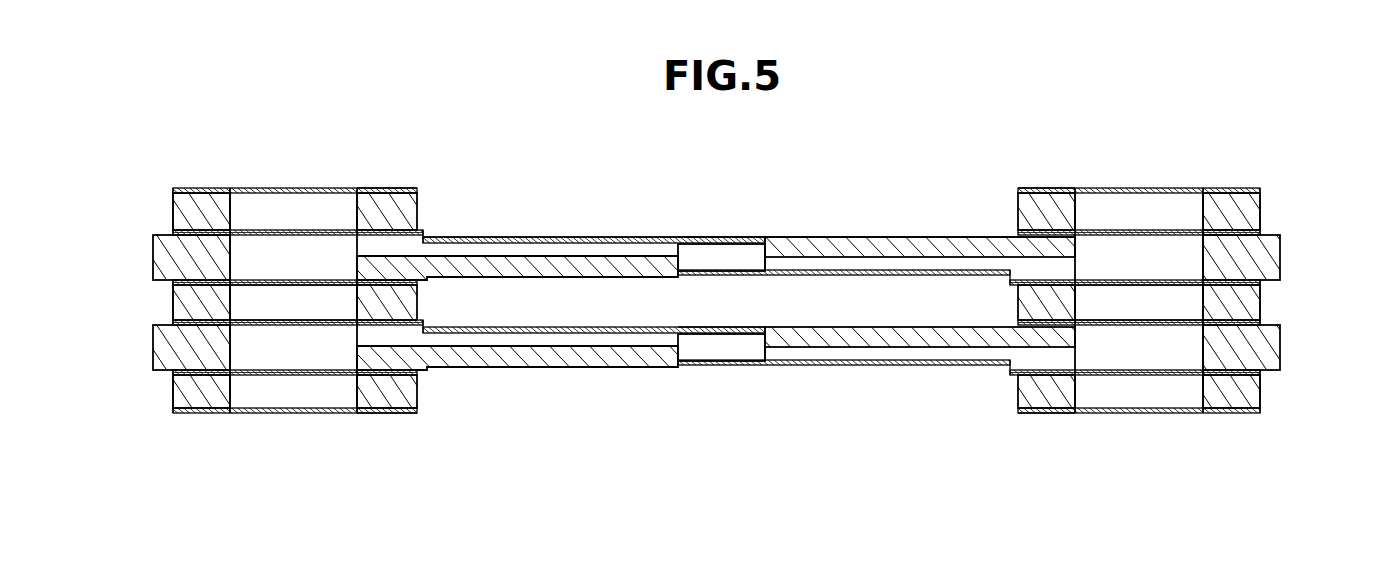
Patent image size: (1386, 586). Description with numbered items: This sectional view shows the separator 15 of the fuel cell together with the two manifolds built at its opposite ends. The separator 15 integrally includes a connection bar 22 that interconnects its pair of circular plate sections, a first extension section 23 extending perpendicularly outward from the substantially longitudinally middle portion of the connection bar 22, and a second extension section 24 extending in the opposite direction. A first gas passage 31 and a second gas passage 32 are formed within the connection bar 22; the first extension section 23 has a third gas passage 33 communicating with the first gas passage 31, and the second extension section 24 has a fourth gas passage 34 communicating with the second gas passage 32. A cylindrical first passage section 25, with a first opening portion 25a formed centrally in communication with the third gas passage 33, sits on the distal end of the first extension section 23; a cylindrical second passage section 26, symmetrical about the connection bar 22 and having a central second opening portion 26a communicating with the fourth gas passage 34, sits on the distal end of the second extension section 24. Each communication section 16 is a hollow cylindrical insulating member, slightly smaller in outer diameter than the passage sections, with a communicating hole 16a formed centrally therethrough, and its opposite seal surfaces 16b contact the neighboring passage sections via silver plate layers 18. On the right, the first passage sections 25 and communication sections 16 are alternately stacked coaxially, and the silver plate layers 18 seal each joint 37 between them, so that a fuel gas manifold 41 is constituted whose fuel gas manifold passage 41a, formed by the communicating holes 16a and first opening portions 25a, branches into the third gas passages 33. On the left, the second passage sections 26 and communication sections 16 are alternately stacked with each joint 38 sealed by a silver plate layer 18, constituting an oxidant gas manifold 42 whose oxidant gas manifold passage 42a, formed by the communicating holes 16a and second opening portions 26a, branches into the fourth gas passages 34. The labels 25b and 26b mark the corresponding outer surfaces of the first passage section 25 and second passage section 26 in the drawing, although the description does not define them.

The separator 15 is at (922, 236).
The communication section 16 is at (177, 213).
The communicating hole 16a is at (357, 200).
The seal surface 16b is at (209, 188).
The silver plate layer 18 is at (383, 188).
The connection bar 22 is at (713, 237).
The first extension section 23 is at (860, 237).
The second extension section 24 is at (558, 237).
The first passage section 25 is at (1277, 257).
The first opening portion 25a is at (1202, 255).
The outer face of right flange 25b is at (1258, 228).
The second passage section 26 is at (156, 262).
The second opening portion 26a is at (232, 258).
The outer face of left flange 26b is at (177, 231).
The first gas passage 31 is at (717, 262).
The second gas passage 32 is at (754, 250).
The third gas passage 33 is at (972, 270).
The fourth gas passage 34 is at (493, 242).
The joint 37 is at (1160, 280).
The joint 38 is at (303, 280).
The fuel gas manifold 41 is at (1033, 186).
The fuel gas manifold passage 41a is at (1123, 313).
The oxidant gas manifold 42 is at (178, 186).
The oxidant gas manifold passage 42a is at (268, 313).